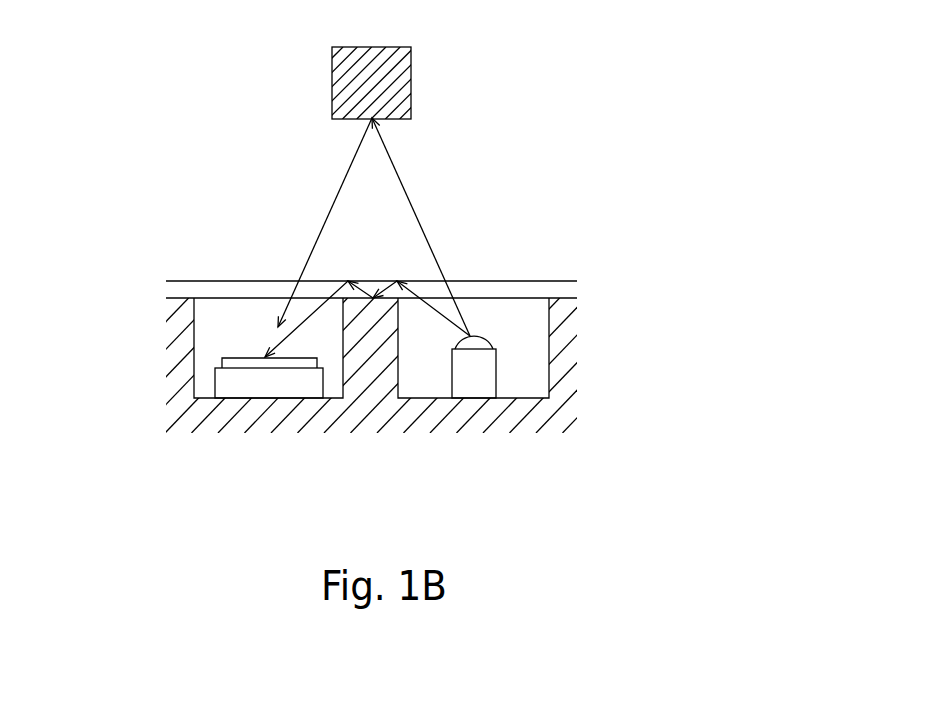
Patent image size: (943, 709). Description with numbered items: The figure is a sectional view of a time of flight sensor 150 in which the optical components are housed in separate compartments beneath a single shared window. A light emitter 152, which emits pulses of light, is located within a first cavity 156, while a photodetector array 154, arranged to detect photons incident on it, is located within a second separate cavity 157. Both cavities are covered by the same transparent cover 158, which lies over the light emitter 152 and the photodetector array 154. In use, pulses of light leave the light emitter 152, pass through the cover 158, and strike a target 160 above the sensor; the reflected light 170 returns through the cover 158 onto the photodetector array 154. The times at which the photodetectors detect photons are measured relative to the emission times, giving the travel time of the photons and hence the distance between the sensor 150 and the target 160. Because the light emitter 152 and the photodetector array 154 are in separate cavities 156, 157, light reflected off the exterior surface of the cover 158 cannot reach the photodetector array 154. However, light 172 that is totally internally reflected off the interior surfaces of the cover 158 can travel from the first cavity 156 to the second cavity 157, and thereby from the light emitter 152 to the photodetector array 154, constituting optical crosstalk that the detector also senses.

The time of flight sensor 150 is at (146, 172).
The light emitter 152 is at (477, 381).
The photodetector array 154 is at (277, 383).
The first cavity 156 is at (523, 332).
The second cavity 157 is at (203, 333).
The transparent cover 158 is at (555, 288).
The target 160 is at (412, 82).
The light reflected off target 170 is at (403, 182).
The totally internally reflected light 172 is at (448, 320).